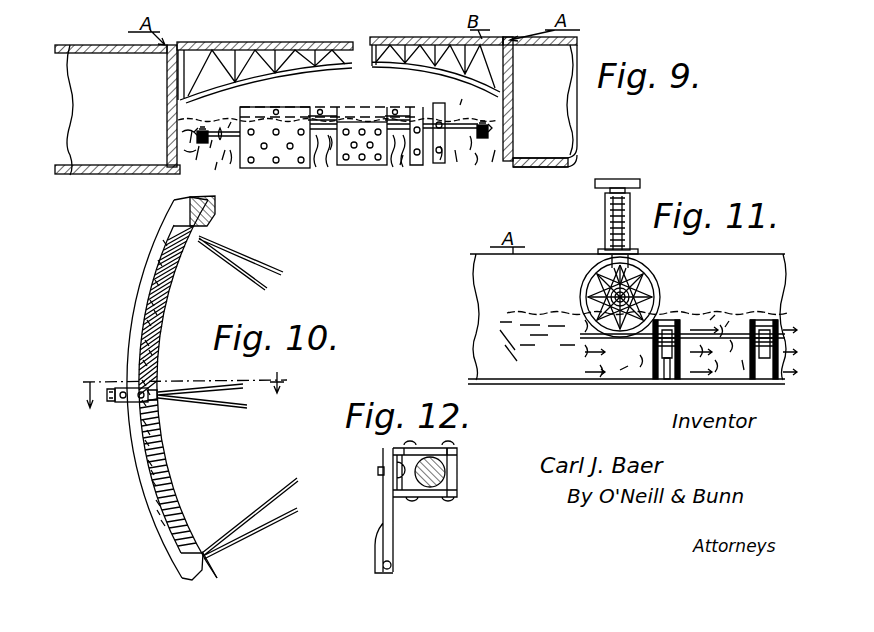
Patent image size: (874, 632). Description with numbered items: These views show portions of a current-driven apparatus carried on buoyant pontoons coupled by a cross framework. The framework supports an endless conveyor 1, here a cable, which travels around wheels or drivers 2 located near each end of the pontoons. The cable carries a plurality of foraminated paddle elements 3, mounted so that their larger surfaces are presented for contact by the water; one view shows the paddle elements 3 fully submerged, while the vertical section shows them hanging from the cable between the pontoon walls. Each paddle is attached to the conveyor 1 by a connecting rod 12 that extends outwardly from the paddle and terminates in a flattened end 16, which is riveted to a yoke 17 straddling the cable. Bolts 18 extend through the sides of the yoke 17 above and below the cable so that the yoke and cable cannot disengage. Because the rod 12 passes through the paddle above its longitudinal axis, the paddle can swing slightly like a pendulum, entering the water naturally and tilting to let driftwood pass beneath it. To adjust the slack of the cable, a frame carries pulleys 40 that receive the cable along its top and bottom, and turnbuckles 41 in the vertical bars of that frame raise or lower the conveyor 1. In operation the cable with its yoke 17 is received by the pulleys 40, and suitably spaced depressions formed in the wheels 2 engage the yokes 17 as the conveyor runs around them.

In FIG. 9, the endless conveyor 1 is at (200, 143).
In FIG. 10, the endless conveyor 1 is at (140, 290).
In FIG. 11, the endless conveyor 1 is at (723, 333).
In FIG. 12, the endless conveyor 1 is at (447, 469).
In FIG. 10, the wheels or drivers 2 is at (158, 318).
In FIG. 9, the foraminated paddle elements 3 is at (397, 162).
In FIG. 11, the foraminated paddle elements 3 is at (665, 345).
In FIG. 9, the connecting rod 12 is at (452, 120).
In FIG. 10, the connecting rod 12 is at (178, 389).
In FIG. 11, the connecting rod 12 is at (675, 352).
In FIG. 12, the connecting rod 12 is at (380, 545).
In FIG. 10, the flattened end 16 is at (115, 402).
In FIG. 12, the flattened end 16 is at (383, 487).
In FIG. 9, the yoke 17 is at (197, 139).
In FIG. 10, the yoke 17 is at (136, 403).
In FIG. 12, the yoke 17 is at (433, 450).
In FIG. 12, the bolts 18 is at (455, 481).
In FIG. 11, the pulleys 40 is at (660, 288).
In FIG. 11, the turnbuckles 41 is at (605, 212).